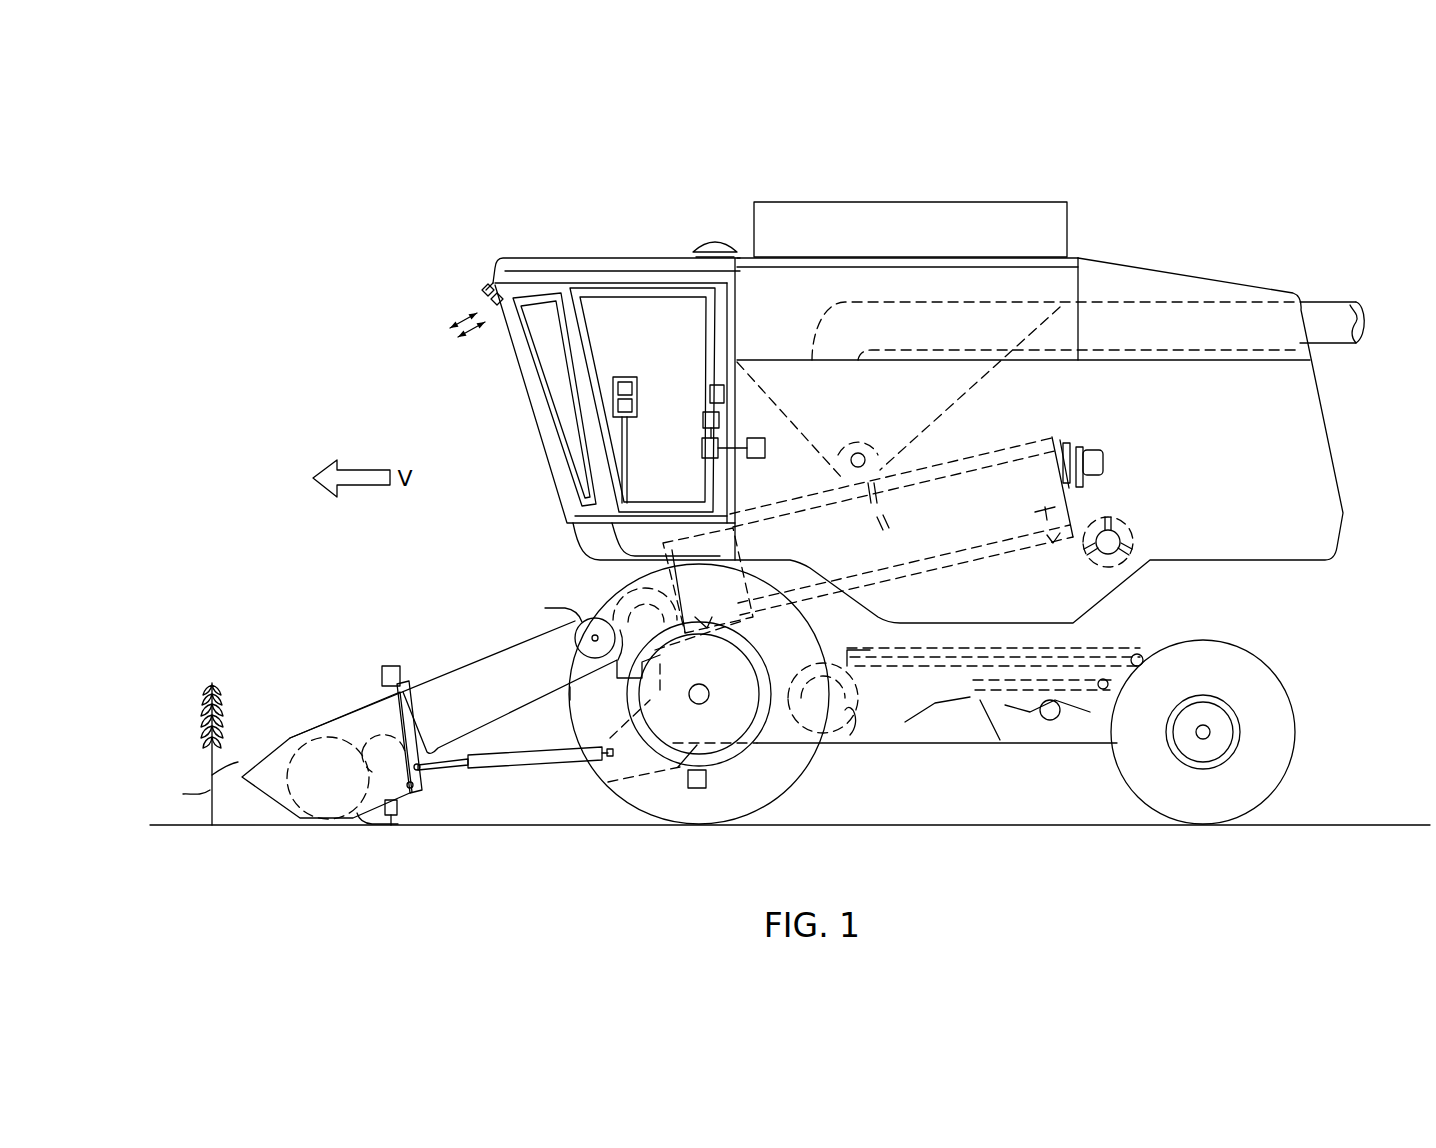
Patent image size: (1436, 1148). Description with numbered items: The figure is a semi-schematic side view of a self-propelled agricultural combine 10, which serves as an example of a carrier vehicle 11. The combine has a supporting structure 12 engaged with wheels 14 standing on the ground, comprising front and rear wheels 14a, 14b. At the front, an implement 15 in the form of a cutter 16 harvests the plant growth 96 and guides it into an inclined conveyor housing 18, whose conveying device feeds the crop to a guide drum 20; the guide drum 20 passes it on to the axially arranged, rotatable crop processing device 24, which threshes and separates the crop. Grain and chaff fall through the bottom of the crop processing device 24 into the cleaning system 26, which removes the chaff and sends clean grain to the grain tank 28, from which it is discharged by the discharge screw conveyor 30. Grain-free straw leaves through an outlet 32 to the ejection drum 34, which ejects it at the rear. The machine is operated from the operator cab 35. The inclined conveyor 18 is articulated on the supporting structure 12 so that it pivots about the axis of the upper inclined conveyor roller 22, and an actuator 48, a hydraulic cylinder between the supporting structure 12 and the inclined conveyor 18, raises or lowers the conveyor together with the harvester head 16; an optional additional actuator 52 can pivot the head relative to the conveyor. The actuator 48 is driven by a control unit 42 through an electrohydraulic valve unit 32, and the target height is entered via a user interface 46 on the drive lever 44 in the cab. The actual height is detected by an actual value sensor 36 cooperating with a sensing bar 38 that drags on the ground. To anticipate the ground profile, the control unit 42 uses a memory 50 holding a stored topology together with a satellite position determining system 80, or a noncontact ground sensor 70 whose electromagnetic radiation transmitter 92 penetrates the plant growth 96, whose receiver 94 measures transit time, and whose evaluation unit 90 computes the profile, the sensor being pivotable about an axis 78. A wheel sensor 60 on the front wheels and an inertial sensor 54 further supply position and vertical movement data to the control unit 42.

The agricultural combine 10 is at (958, 383).
The carrier vehicle 11 is at (1148, 205).
The supporting structure 12 is at (996, 735).
The wheels 14 is at (805, 784).
The front wheels 14a is at (745, 787).
The rear wheels 14b is at (1260, 710).
The implement 15 is at (327, 732).
The cutter 16 is at (323, 740).
The inclined conveyor housing 18 is at (478, 677).
The guide drum 20 is at (662, 548).
The upper inclined conveyor roller 22 is at (578, 620).
The crop processing device 24 is at (1095, 502).
The cleaning system 26 is at (878, 641).
The grain tank 28 is at (768, 318).
The discharge screw conveyor 30 is at (1167, 335).
The outlet 32 is at (720, 418).
The ejection drum 34 is at (1132, 514).
The operator cab 35 is at (672, 377).
The actual value sensor 36 is at (398, 806).
The sensing bar 38 is at (370, 828).
The control unit 42 is at (703, 455).
The drive lever 44 is at (627, 430).
The user interface 46 is at (640, 368).
The actuator 48 is at (518, 762).
The memory 50 is at (760, 458).
The additional actuator 52 is at (389, 665).
The inertial sensor 54 is at (710, 396).
The wheel sensor 60 is at (700, 795).
The noncontact ground sensor 70 is at (477, 337).
The axis 78 is at (483, 283).
The position determining system 80 is at (710, 238).
The evaluation unit 90 is at (488, 283).
The electromagnetic radiation transmitter 92 is at (478, 293).
The receiver 94 is at (487, 306).
The plant growth 96 is at (233, 762).